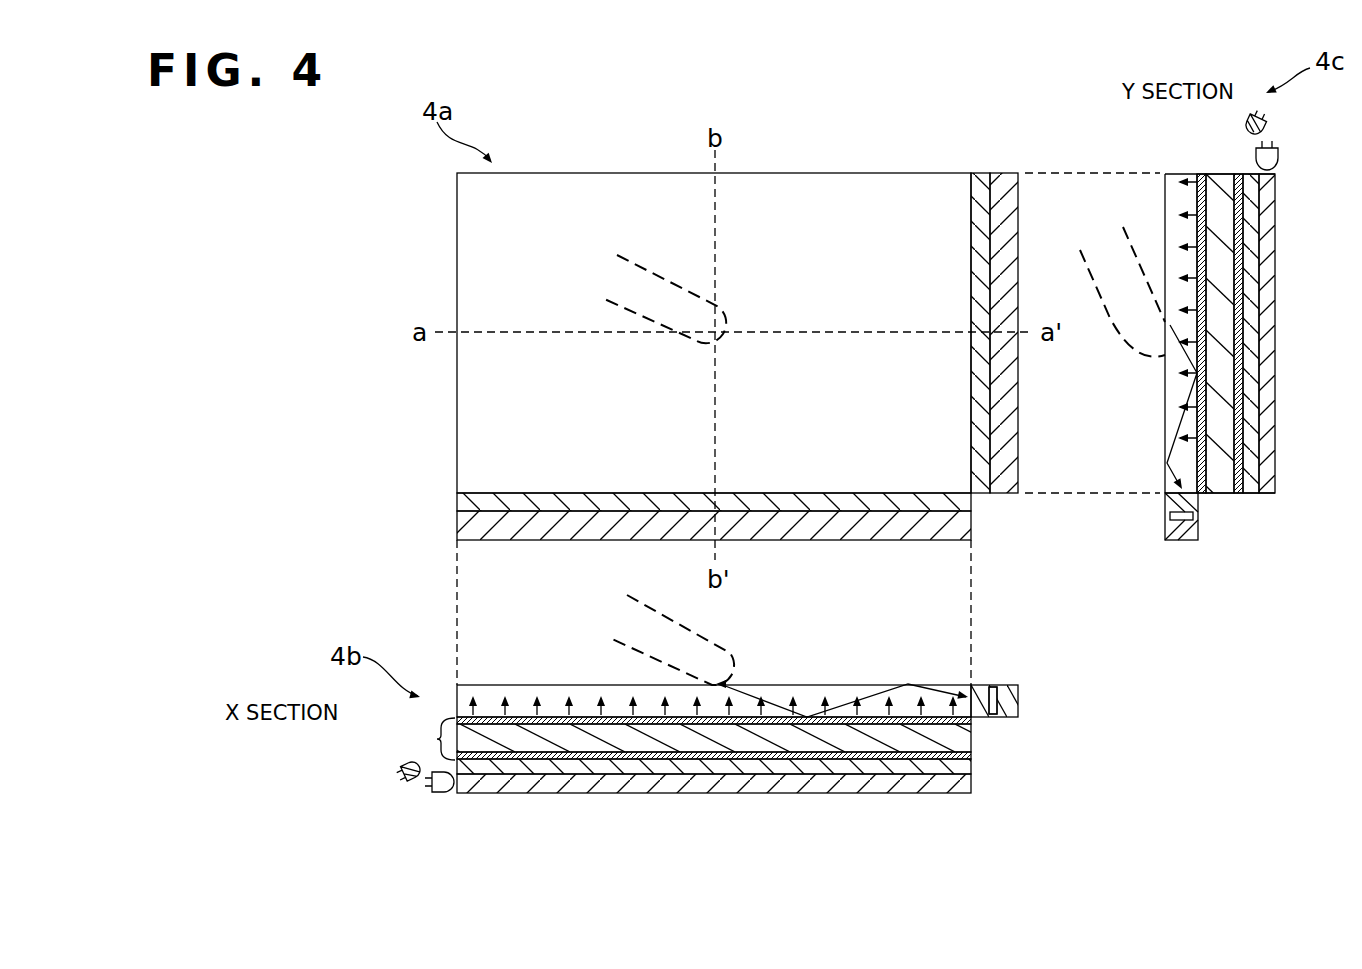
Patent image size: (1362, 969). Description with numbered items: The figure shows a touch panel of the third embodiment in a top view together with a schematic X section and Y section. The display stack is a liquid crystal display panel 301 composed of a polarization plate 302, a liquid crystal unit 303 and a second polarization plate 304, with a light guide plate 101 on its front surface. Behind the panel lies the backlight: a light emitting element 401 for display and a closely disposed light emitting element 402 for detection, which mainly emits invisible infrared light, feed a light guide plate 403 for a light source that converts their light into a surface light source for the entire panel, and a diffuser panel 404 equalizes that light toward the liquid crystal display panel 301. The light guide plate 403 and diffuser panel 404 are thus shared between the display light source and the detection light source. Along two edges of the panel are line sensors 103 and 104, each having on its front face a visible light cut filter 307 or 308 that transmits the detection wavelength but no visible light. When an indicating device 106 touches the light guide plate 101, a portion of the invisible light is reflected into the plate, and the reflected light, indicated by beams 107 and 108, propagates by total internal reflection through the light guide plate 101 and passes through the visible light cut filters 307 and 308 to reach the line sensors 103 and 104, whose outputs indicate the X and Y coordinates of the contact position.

The light guide plate 101 is at (507, 685).
The line sensor 103 is at (457, 522).
The line sensor 104 is at (1000, 173).
The indicating device 106 is at (700, 628).
The beam 107 is at (762, 710).
The beam 108 is at (1172, 375).
The liquid crystal display panel 301 is at (437, 740).
The polarization plate 302 is at (973, 722).
The liquid crystal unit 303 is at (973, 745).
The polarization plate 304 is at (973, 758).
The visible light cut filter 307 is at (1165, 505).
The visible light cut filter 308 is at (994, 686).
The light emitting element for display 401 is at (440, 792).
The light emitting element for detection 402 is at (402, 780).
The light guide plate for a light source 403 is at (640, 793).
The diffuser panel 404 is at (846, 770).